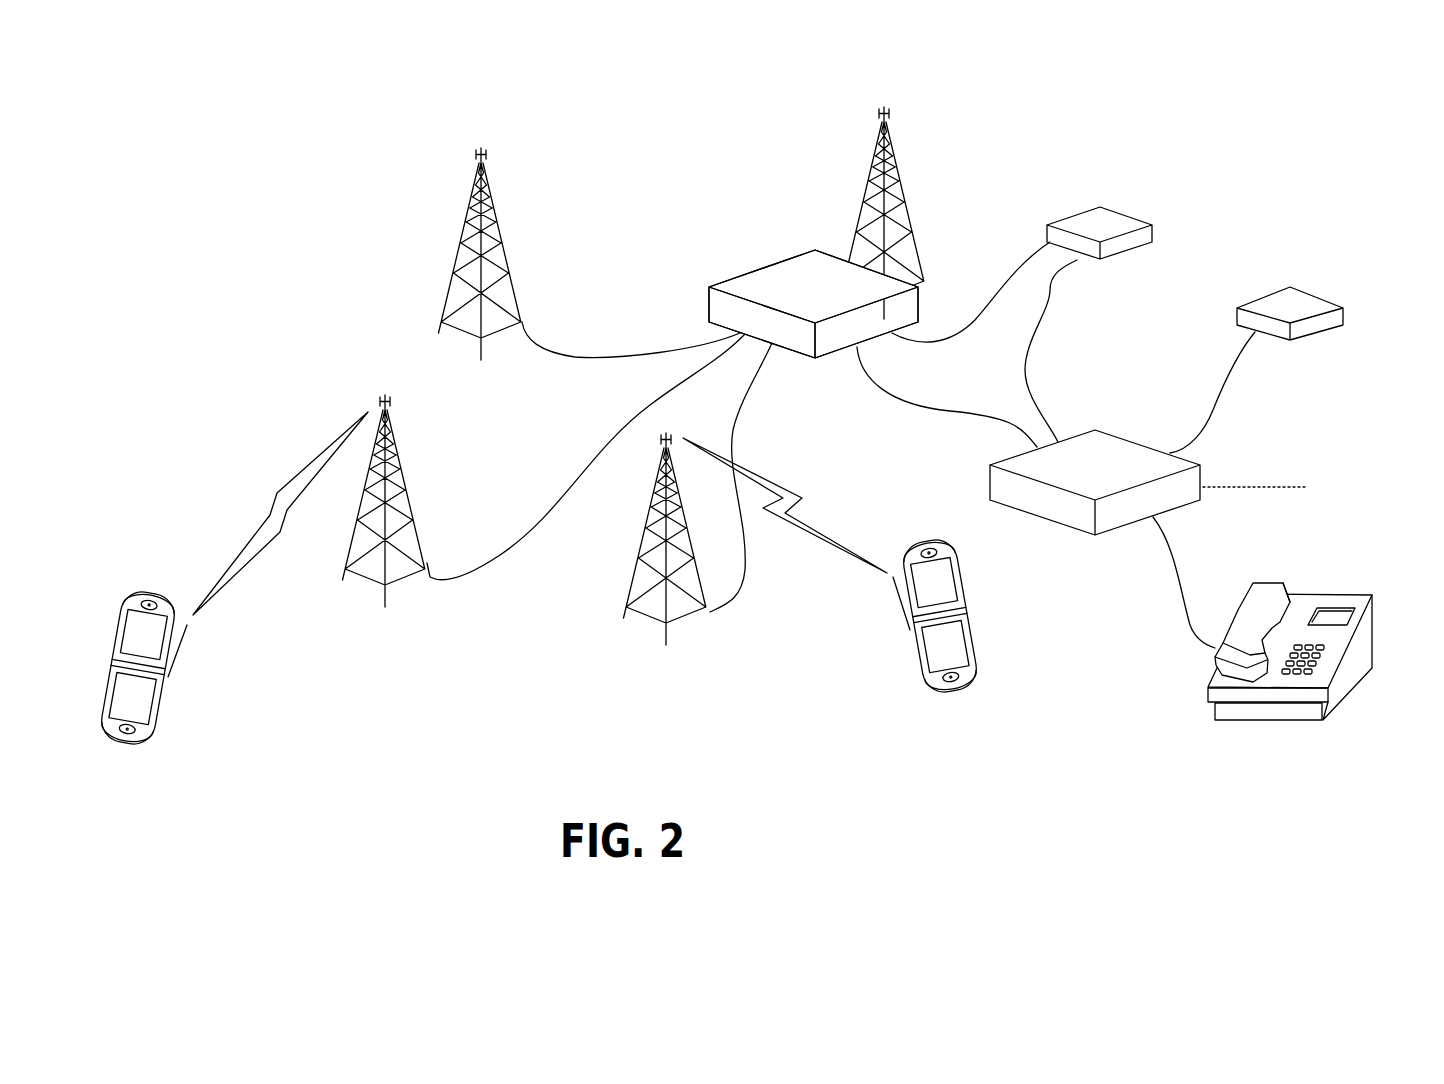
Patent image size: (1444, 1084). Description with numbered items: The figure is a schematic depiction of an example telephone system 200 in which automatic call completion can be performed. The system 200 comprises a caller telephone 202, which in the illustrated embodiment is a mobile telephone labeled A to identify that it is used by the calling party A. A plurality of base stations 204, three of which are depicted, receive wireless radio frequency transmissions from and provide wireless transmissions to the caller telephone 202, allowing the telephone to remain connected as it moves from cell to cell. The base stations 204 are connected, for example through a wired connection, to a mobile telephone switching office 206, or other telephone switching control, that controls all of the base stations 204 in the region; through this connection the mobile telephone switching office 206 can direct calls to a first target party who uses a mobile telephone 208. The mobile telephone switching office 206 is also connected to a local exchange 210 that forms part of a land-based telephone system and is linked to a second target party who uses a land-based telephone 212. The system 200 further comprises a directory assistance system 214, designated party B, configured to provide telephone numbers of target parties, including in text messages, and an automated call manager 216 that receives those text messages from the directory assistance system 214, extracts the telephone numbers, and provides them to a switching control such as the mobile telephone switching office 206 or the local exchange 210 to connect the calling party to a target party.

The telephone system 200 is at (179, 122).
The caller telephone 202 is at (108, 692).
The base stations 204 is at (512, 262).
The mobile telephone switching office 206 is at (735, 202).
The mobile telephone 208 is at (907, 628).
The local exchange 210 is at (1105, 447).
The land-based telephone 212 is at (1365, 622).
The directory assistance system 214 is at (1297, 305).
The automated call manager 216 is at (1107, 225).